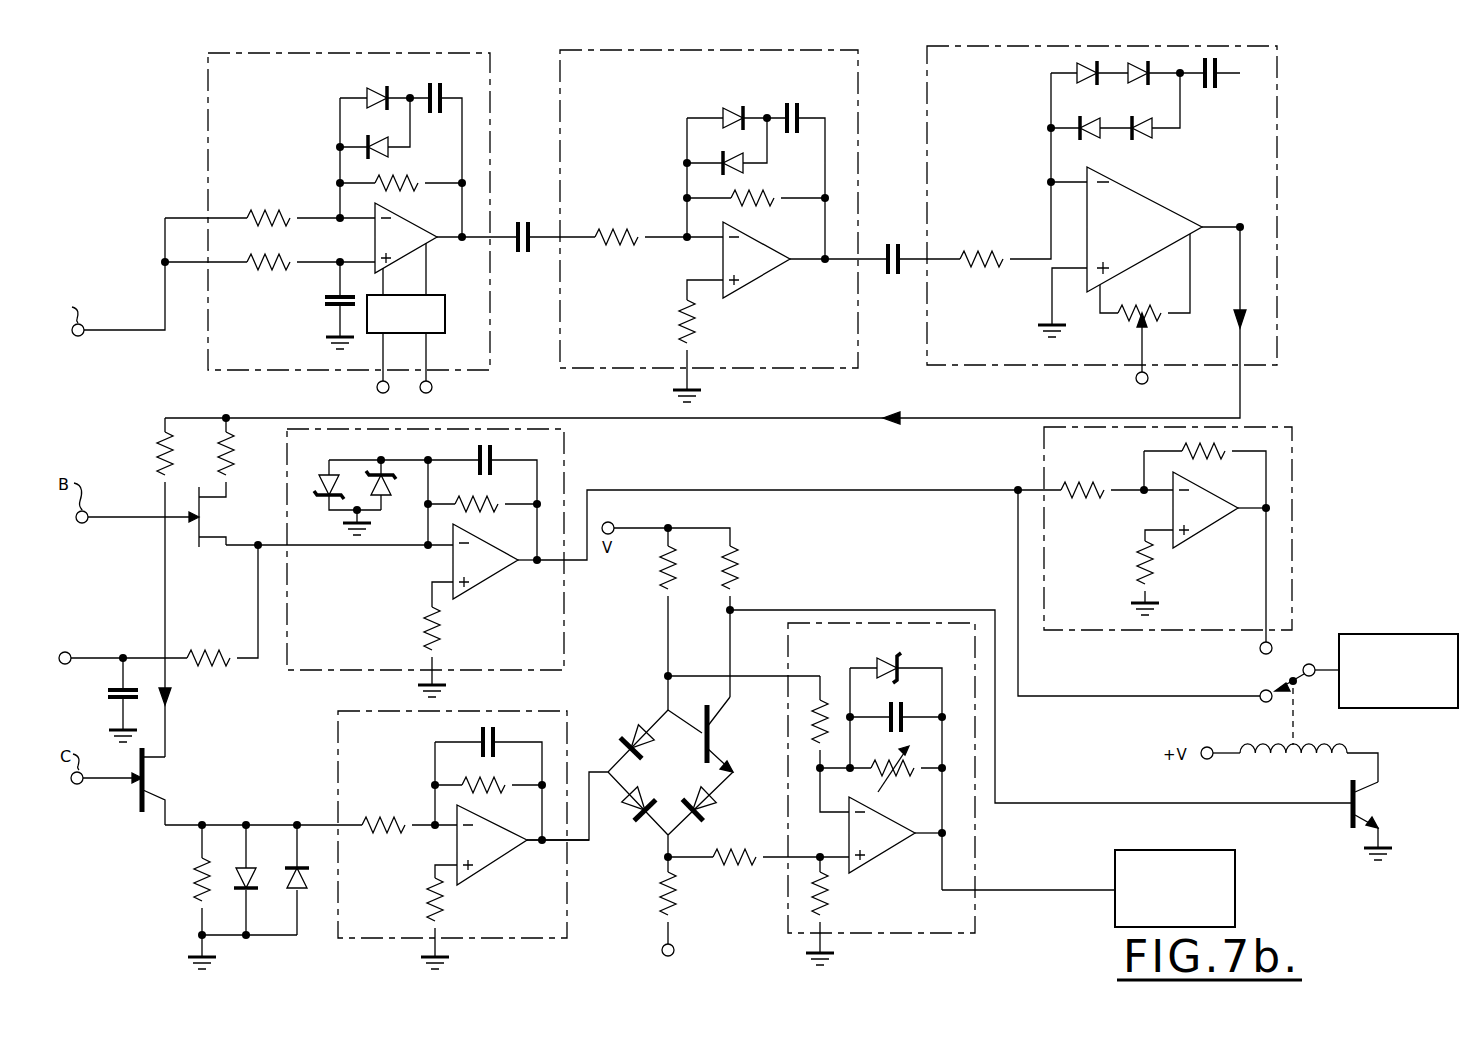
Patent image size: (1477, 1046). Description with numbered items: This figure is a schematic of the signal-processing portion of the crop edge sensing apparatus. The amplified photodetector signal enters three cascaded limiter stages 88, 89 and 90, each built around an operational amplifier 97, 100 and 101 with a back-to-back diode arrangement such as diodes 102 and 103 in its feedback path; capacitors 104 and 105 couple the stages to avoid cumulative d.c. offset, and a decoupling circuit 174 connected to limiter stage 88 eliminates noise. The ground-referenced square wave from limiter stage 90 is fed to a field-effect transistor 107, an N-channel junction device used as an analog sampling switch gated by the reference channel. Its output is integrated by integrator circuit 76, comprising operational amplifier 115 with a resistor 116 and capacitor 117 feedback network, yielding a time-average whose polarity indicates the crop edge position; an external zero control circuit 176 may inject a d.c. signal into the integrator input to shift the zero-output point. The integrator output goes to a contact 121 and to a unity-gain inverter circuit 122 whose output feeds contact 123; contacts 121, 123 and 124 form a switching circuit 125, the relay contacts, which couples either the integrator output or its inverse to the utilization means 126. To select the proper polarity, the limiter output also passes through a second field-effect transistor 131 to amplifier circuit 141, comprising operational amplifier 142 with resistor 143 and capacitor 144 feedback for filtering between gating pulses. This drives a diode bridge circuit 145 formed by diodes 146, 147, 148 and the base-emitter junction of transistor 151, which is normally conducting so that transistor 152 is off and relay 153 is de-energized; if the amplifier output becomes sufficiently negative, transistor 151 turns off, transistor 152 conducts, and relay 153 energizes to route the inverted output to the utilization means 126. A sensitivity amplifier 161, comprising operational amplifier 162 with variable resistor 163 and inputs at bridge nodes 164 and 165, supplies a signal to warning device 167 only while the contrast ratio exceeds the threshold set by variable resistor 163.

The limiter stage 88 is at (287, 233).
The limiter stage 89 is at (560, 100).
The limiter stage 90 is at (927, 90).
The diode 103 is at (396, 84).
The diode 102 is at (390, 150).
The operational amplifier 97 is at (405, 219).
The decoupling circuit 174 is at (445, 308).
The capacitor 104 is at (523, 254).
The capacitor 105 is at (893, 276).
The operational amplifier 100 is at (763, 274).
The operational amplifier 101 is at (1147, 198).
The field-effect transistor 107 is at (199, 550).
The external zero control circuit 176 is at (82, 643).
The integrator circuit 76 is at (565, 465).
The capacitor 117 is at (478, 450).
The resistor 116 is at (482, 511).
The operational amplifier 115 is at (492, 577).
The unity-gain inverter circuit 122 is at (1292, 467).
The contact 123 is at (1260, 648).
The contact 124 is at (1308, 664).
The utilization means 126 is at (1398, 634).
The contact 121 is at (1260, 702).
The switching circuit 125 is at (1343, 734).
The field-effect transistor 131 is at (148, 783).
The amplifier circuit 141 is at (337, 733).
The capacitor 144 is at (495, 734).
The resistor 143 is at (483, 792).
The operational amplifier 142 is at (495, 862).
The diode 146 is at (630, 738).
The diode 147 is at (620, 813).
The diode 148 is at (714, 797).
The diode bridge circuit 145 is at (652, 778).
The transistor 151 is at (712, 733).
The node 164 is at (664, 862).
The node 165 is at (666, 676).
The sensitivity amplifier 161 is at (788, 655).
The variable resistor 163 is at (887, 784).
The operational amplifier 162 is at (880, 855).
The warning device 167 is at (1178, 850).
The transistor 152 is at (1360, 796).
The relay 153 is at (1270, 768).